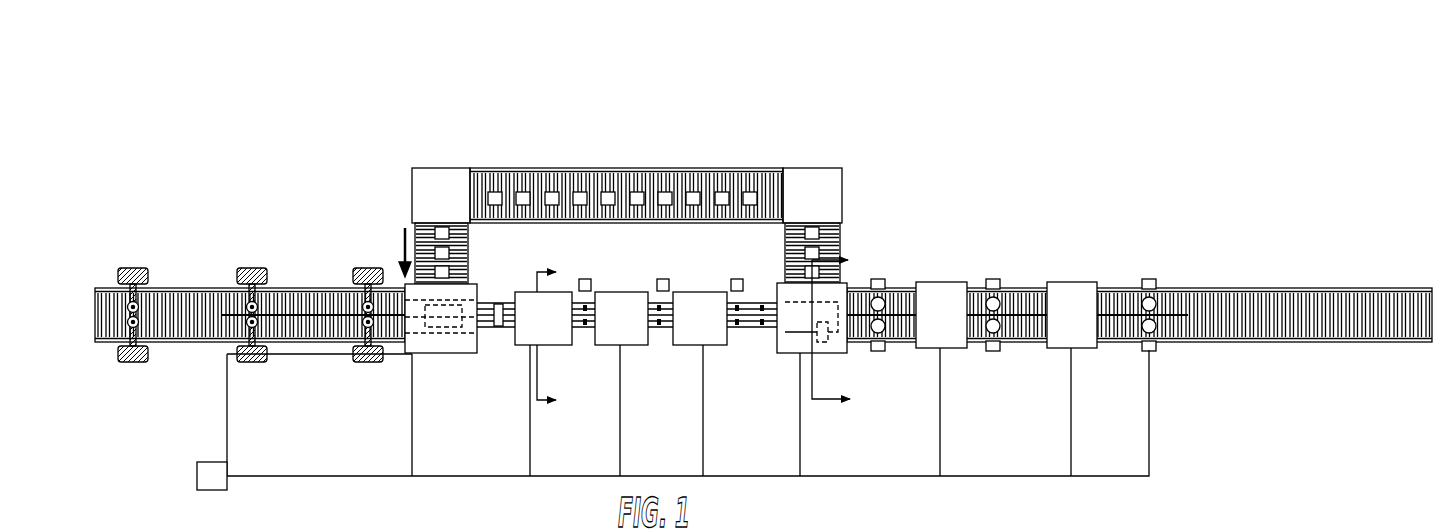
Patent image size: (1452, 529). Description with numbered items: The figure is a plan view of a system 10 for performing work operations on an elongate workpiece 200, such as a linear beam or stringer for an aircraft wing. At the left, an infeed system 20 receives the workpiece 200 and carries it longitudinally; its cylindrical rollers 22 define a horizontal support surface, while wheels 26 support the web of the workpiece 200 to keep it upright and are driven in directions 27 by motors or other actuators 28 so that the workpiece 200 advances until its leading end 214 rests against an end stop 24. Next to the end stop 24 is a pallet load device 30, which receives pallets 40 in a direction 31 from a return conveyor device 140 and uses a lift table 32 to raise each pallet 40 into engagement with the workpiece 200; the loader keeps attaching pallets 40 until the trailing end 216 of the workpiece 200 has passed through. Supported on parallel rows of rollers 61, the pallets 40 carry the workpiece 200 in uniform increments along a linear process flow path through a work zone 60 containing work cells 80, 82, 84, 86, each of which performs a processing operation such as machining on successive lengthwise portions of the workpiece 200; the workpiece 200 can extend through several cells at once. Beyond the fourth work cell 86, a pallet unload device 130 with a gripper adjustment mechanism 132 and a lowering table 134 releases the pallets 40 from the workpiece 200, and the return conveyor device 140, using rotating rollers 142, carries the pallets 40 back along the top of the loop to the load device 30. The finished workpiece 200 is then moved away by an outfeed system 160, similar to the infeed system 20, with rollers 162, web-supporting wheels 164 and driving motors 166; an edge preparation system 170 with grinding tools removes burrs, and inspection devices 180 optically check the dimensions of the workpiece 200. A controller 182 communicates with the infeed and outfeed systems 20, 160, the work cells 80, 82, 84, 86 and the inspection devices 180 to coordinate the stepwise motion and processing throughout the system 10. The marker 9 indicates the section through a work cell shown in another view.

The system 10 is at (763, 294).
The infeed system 20 is at (582, 276).
The cylindrical rollers 22 is at (180, 301).
The end stop 24 is at (475, 330).
The wheels 26 is at (257, 312).
The directions 27 is at (392, 322).
The actuators 28 is at (250, 268).
The pallet load device 30 is at (441, 374).
The direction 31 is at (402, 252).
The lift table 32 is at (437, 330).
The pallets 40 is at (627, 249).
The work zone 60 is at (621, 369).
The rollers 61 is at (762, 328).
The work cell 80 is at (548, 345).
The work cell 82 is at (628, 345).
The work cell 84 is at (692, 345).
The work cell 86 is at (817, 369).
The pallet unload device 130 is at (817, 363).
The gripper adjustment mechanism 132 is at (822, 343).
The lowering table 134 is at (796, 355).
The return conveyor device 140 is at (702, 168).
The rotating rollers 142 is at (654, 172).
The outfeed system 160 is at (1139, 270).
The rollers 162 is at (1120, 345).
The wheels 164 is at (886, 299).
The motors 166 is at (880, 279).
The edge preparation system 170 is at (945, 282).
The inspection devices 180 is at (585, 279).
The controller 182 is at (205, 490).
The workpiece 200 is at (313, 288).
The leading end 214 is at (498, 303).
The trailing end 216 is at (222, 316).
The section line 9- 9 is at (554, 336).